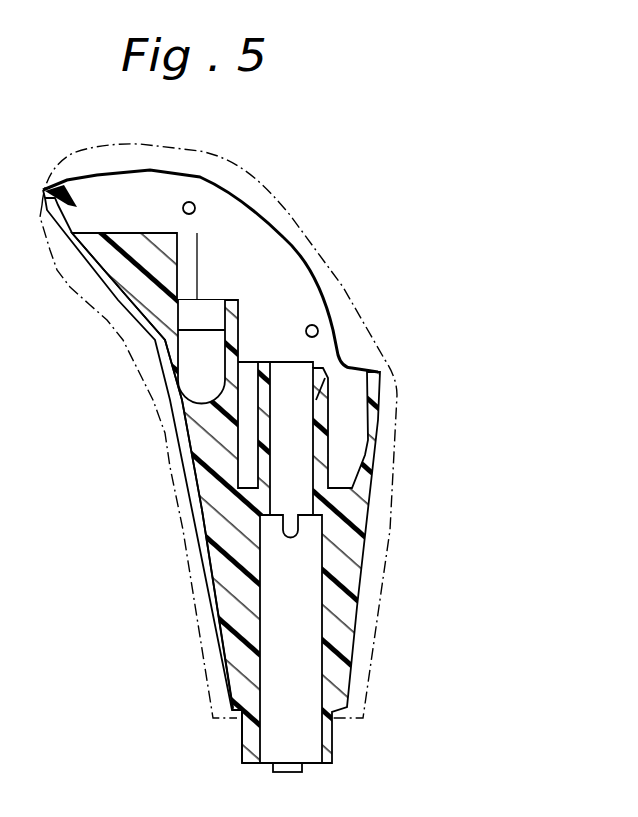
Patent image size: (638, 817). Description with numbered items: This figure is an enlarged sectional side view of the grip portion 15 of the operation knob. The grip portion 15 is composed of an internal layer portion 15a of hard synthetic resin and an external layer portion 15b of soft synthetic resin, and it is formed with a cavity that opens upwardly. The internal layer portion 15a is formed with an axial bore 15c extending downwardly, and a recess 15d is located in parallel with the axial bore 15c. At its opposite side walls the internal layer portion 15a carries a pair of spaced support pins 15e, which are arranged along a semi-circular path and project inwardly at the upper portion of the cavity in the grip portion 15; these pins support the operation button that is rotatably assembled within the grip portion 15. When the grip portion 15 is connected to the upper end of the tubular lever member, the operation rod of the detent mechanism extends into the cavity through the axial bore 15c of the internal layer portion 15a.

The grip portion 15 is at (398, 447).
The internal layer portion 15a is at (210, 503).
The external layer portion 15b is at (203, 590).
The axial bore 15c is at (315, 600).
The recess 15d is at (186, 362).
The support pins 15e is at (195, 206).